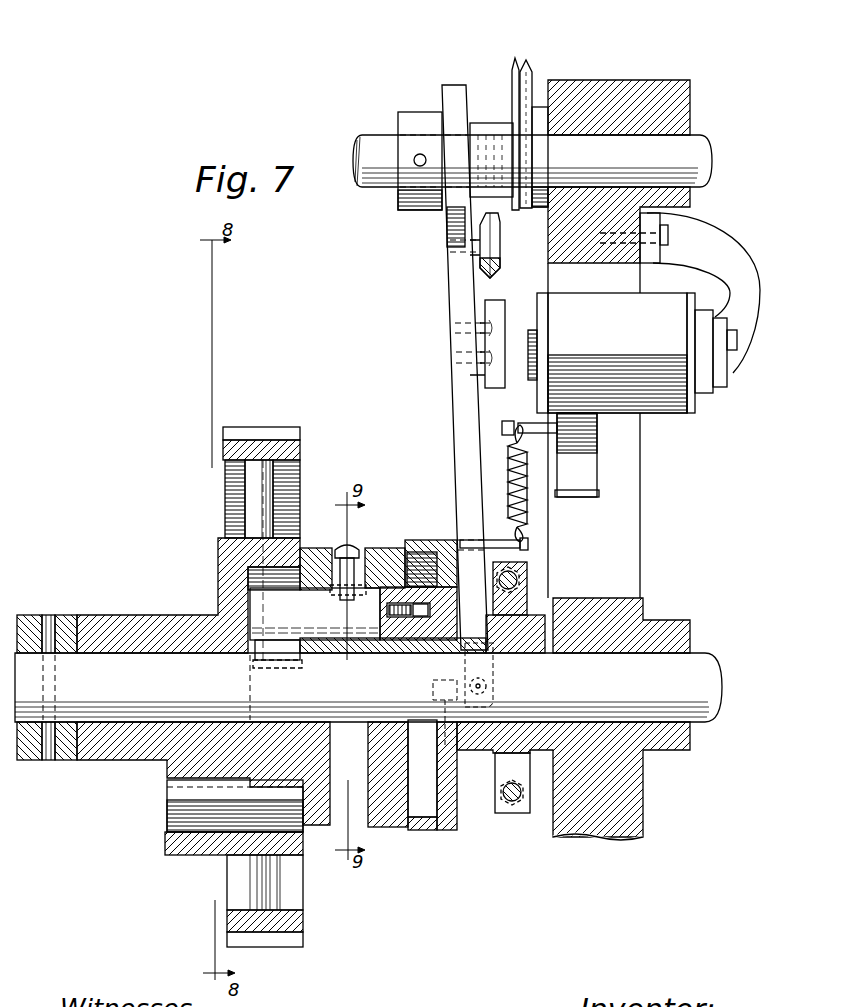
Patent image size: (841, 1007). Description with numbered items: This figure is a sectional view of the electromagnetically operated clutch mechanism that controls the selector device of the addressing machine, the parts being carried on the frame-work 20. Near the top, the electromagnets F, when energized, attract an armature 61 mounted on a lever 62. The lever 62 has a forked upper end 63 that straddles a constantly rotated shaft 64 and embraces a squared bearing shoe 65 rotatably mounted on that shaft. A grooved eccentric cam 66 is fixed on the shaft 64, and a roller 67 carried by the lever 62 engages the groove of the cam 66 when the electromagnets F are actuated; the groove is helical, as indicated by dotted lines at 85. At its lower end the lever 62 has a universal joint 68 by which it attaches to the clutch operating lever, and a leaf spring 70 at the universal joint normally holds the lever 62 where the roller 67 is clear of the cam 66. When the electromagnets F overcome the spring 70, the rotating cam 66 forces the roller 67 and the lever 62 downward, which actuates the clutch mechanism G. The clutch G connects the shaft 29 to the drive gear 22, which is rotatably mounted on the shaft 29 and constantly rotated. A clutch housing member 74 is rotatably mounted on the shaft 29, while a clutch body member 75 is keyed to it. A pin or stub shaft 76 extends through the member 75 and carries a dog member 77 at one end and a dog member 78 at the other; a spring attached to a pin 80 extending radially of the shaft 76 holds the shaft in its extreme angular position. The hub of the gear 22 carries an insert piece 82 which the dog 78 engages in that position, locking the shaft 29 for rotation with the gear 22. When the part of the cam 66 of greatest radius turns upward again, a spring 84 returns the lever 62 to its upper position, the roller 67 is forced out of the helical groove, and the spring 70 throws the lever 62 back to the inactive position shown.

The frame-work 20 is at (625, 797).
The drive gear 22 is at (218, 570).
The shaft 29 is at (703, 652).
The armature 61 is at (487, 378).
The lever 62 is at (465, 450).
The forked upper end 63 is at (450, 95).
The shaft 64 is at (378, 140).
The squared bearing shoe 65 is at (488, 124).
The grooved eccentric cam 66 is at (515, 58).
The roller 67 is at (500, 265).
The universal joint 68 is at (512, 683).
The leaf spring 70 is at (497, 655).
The clutch housing member 74 is at (427, 540).
The clutch body member 75 is at (388, 546).
The pin or stub shaft 76 is at (315, 614).
The dog member 77 is at (425, 650).
The dog member 78 is at (277, 651).
The pin 80 is at (347, 555).
The insert piece 82 is at (180, 808).
The spring 84 is at (522, 513).
The helical groove 85 is at (537, 92).
The electromagnets F is at (660, 422).
The clutch mechanism G is at (465, 822).